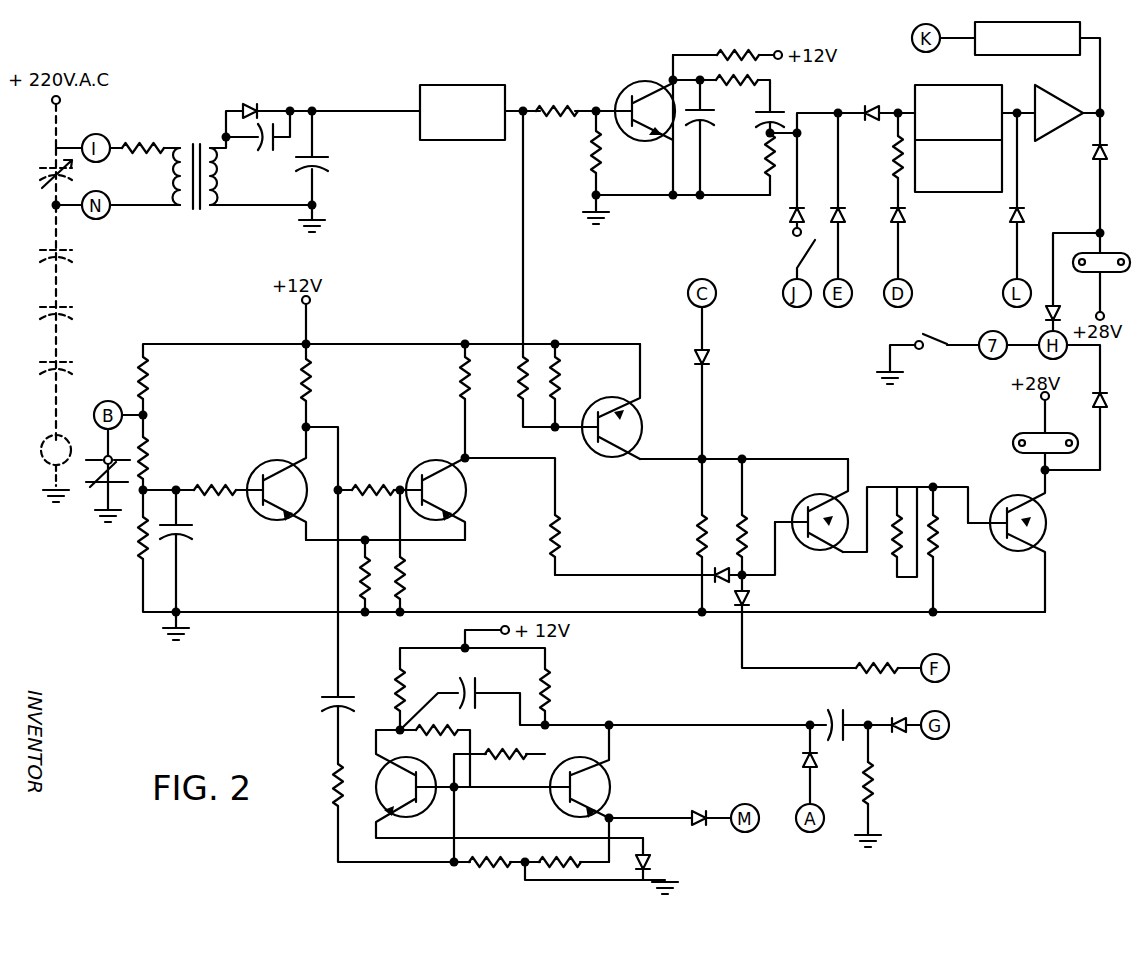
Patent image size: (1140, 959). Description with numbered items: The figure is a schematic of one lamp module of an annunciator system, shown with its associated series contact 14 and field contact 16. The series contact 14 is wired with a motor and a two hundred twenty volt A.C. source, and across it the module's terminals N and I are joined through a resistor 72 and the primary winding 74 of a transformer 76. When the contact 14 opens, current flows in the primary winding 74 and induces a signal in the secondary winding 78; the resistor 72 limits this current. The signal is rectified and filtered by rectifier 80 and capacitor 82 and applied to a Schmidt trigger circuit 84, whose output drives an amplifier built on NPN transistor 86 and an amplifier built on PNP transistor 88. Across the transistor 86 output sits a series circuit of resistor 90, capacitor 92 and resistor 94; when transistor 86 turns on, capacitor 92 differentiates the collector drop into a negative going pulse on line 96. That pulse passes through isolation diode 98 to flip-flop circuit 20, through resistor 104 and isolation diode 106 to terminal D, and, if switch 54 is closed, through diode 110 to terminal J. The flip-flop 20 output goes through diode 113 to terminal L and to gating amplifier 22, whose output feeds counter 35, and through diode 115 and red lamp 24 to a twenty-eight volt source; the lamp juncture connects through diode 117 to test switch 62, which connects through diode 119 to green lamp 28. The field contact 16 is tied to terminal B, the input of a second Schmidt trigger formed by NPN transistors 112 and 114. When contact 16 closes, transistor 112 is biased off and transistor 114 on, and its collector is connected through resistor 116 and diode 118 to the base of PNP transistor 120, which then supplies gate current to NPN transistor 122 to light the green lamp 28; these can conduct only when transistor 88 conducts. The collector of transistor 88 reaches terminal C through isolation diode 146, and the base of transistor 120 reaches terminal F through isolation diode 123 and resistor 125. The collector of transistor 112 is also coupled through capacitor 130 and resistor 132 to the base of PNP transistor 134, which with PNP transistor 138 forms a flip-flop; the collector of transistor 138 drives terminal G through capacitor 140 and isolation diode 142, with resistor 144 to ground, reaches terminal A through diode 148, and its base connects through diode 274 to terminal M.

The series contact 14 is at (38, 170).
The field contact 16 is at (90, 459).
The flip-flop circuit 20 is at (967, 85).
The gating amplifier 22 is at (1069, 134).
The red lamp 24 is at (1125, 272).
The green lamp 28 is at (1016, 432).
The counter 35 is at (1054, 56).
The switch 54 is at (794, 260).
The test switch 62 is at (925, 332).
The resistor 72 is at (144, 148).
The primary winding 74 is at (176, 176).
The transformer 76 is at (194, 145).
The secondary winding 78 is at (218, 186).
The rectifier 80 is at (249, 104).
The capacitor 82 is at (330, 168).
The Schmidt trigger circuit 84 is at (505, 85).
The NPN transistor 86 is at (634, 82).
The PNP transistor 88 is at (642, 416).
The resistor 90 is at (756, 86).
The capacitor 92 is at (776, 110).
The resistor 94 is at (762, 156).
The line 96 is at (808, 114).
The isolation diode 98 is at (872, 106).
The resistor 104 is at (892, 154).
The isolation diode 106 is at (846, 212).
The diode 110 is at (792, 220).
The NPN transistor 112 is at (270, 450).
The diode 113 is at (1008, 220).
The NPN transistor 114 is at (414, 456).
The diode 115 is at (1108, 150).
The resistor 116 is at (562, 532).
The diode 117 is at (1046, 312).
The diode 118 is at (732, 582).
The diode 119 is at (1108, 400).
The PNP transistor 120 is at (806, 496).
The NPN transistor 122 is at (1046, 522).
The isolation diode 123 is at (750, 598).
The resistor 125 is at (861, 668).
The capacitor 130 is at (322, 712).
The resistor 132 is at (328, 784).
The PNP transistor 134 is at (406, 817).
The PNP transistor 138 is at (606, 772).
The capacitor 140 is at (828, 698).
The isolation diode 142 is at (898, 732).
The resistor 144 is at (876, 786).
The isolation diode 146 is at (710, 353).
The diode 148 is at (802, 758).
The diode 274 is at (696, 810).